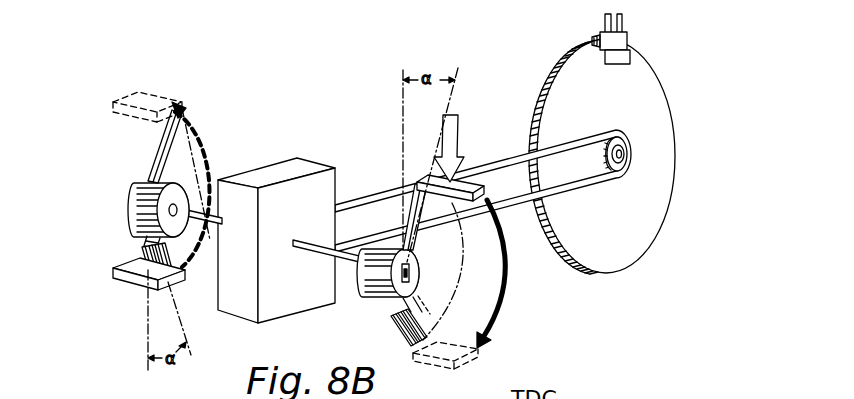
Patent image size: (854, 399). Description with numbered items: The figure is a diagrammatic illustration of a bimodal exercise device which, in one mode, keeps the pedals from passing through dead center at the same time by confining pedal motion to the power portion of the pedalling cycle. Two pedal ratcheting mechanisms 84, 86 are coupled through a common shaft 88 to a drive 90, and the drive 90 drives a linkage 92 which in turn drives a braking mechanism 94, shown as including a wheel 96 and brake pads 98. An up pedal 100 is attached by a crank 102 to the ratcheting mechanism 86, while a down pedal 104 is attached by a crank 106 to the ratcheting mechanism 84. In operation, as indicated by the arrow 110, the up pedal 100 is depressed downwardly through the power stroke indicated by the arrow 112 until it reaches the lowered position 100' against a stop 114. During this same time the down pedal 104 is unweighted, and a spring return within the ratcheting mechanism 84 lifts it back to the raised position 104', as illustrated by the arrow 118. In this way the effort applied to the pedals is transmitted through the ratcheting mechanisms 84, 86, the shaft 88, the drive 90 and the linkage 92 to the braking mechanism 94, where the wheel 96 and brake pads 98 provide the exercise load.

The pedal ratcheting mechanism 84 is at (143, 193).
The pedal ratcheting mechanism 86 is at (373, 293).
The common shaft 88 is at (333, 258).
The drive 90 is at (308, 226).
The linkage 92 is at (527, 157).
The braking mechanism 94 is at (548, 91).
The wheel 96 is at (638, 110).
The brake pads 98 is at (633, 52).
The up pedal 100 is at (467, 168).
The position of up pedal 100' is at (479, 351).
The crank 102 is at (418, 238).
The down pedal 104 is at (127, 286).
The position of down pedal 104' is at (118, 137).
The crank 106 is at (143, 240).
The arrow 110 is at (453, 120).
The arrow 112 is at (508, 278).
The stop 114 is at (140, 253).
The arrow 118 is at (208, 157).